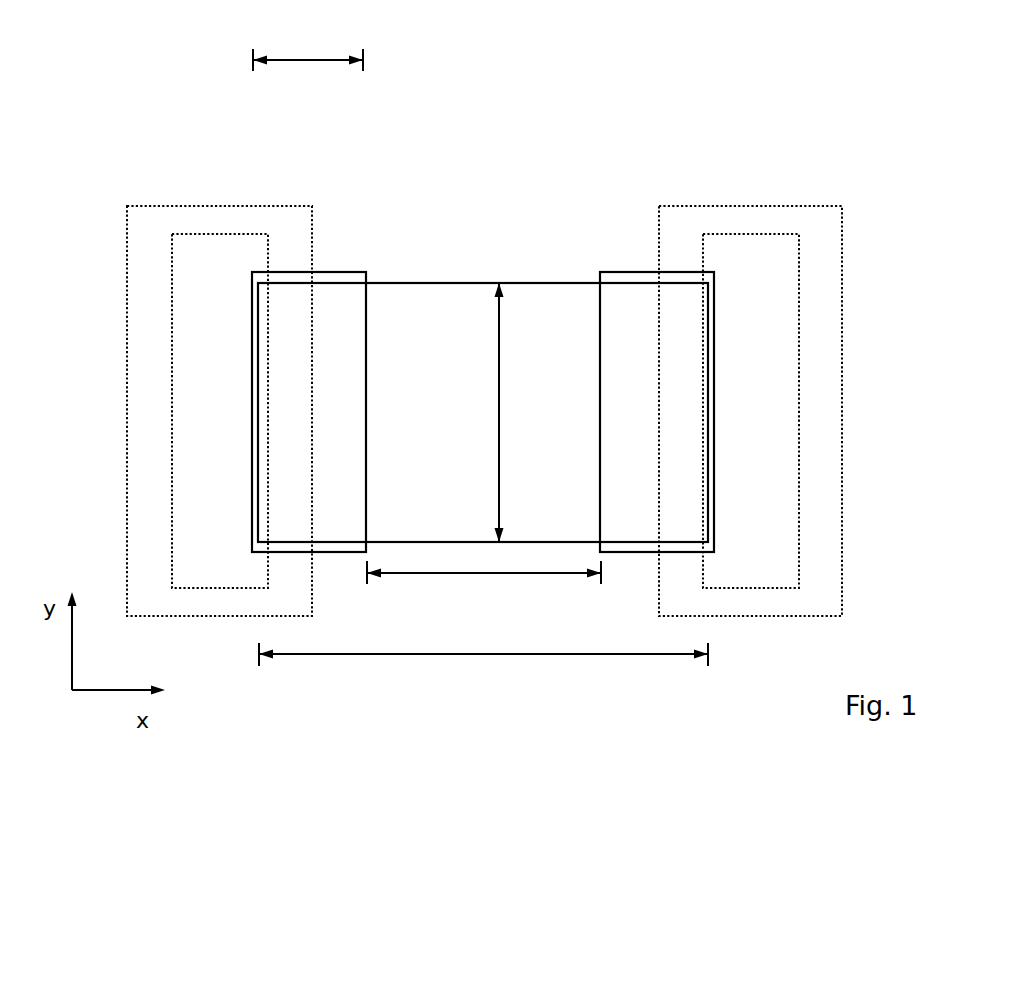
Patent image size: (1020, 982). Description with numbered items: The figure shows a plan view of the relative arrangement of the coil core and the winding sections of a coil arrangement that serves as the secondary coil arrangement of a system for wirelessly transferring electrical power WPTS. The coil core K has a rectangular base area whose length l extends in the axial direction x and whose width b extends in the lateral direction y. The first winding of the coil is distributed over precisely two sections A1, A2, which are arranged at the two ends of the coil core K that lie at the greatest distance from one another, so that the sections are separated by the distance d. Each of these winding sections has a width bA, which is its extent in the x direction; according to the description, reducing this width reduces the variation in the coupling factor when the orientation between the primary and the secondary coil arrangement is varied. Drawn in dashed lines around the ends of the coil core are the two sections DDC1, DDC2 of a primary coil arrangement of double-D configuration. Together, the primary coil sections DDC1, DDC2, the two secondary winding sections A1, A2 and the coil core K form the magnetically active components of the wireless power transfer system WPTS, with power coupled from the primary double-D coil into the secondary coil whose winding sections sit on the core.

The system for wirelessly transferring electrical power WPTS is at (538, 89).
The first section of the primary coil arrangement DDC1 is at (163, 207).
The second section of the primary coil arrangement DDC2 is at (735, 207).
The first section of the coil A1 is at (338, 272).
The second section of the coil A2 is at (625, 272).
The coil core K is at (411, 283).
The width of a section of a winding bA is at (308, 73).
The width of the coil core b is at (514, 412).
The distance between the sections d is at (484, 583).
The length of the coil core l is at (483, 643).